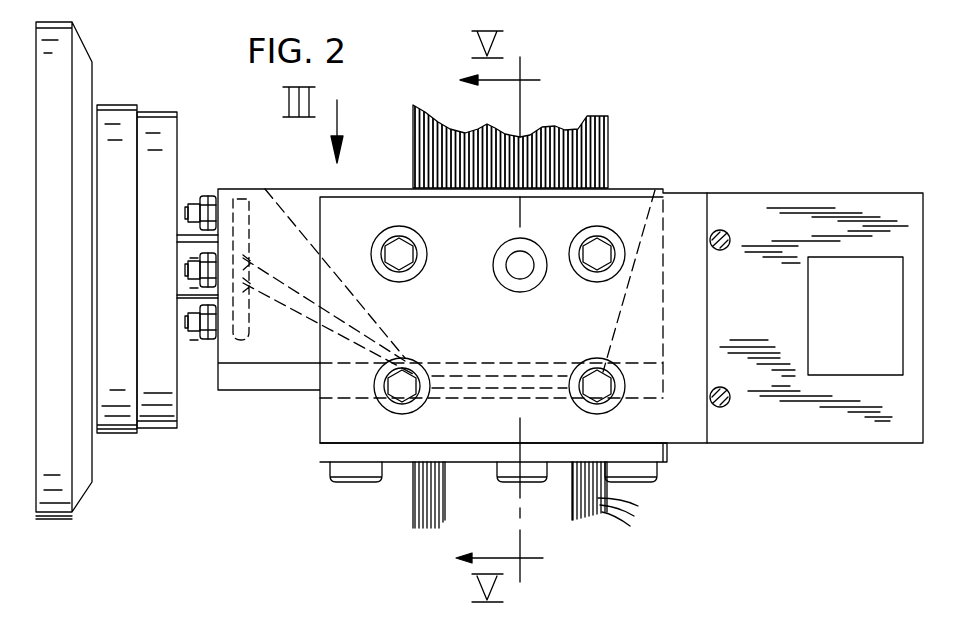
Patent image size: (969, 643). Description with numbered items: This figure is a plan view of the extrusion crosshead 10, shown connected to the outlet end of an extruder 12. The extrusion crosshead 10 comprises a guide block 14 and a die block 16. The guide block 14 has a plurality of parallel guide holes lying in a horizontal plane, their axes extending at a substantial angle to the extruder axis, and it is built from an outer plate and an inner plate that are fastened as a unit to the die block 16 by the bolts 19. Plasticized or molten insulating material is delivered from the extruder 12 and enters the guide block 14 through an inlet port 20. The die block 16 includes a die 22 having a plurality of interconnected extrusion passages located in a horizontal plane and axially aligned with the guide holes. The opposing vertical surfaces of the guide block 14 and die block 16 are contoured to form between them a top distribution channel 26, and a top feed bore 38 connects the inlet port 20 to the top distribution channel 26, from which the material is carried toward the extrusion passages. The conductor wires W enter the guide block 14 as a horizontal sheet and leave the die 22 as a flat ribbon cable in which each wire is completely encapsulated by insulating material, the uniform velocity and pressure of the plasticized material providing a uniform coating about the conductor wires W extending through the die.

The extrusion crosshead 10 is at (284, 438).
The extruder 12 is at (58, 52).
The guide block 14 is at (314, 461).
The die block 16 is at (233, 364).
The bolts 19 is at (354, 483).
The inlet port 20 is at (248, 198).
The die 22 is at (460, 368).
The top distribution channel 26 is at (497, 396).
The top feed bore 38 is at (283, 293).
The conductor wires W is at (422, 518).